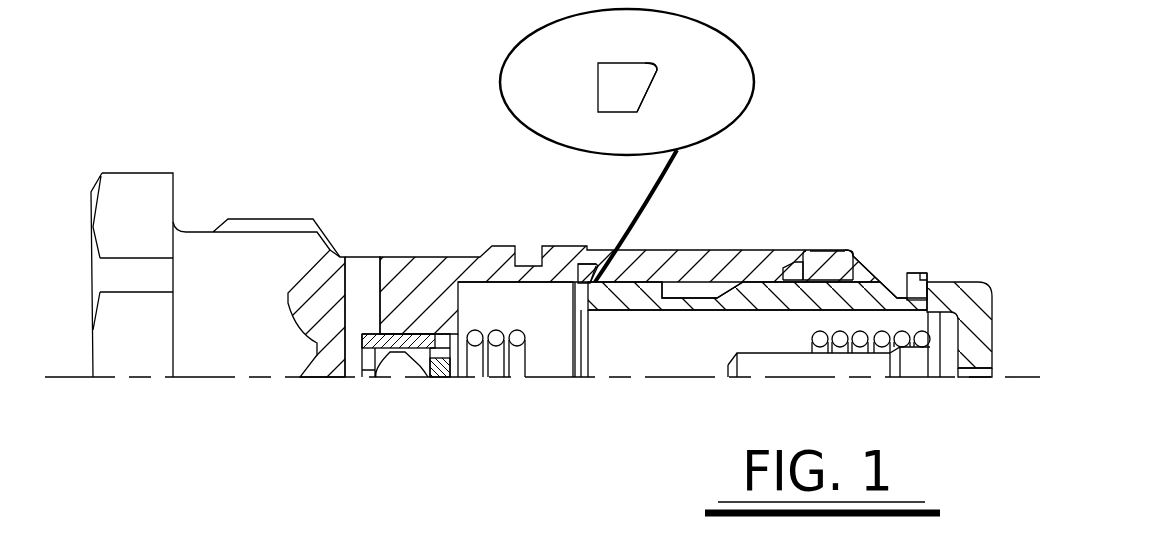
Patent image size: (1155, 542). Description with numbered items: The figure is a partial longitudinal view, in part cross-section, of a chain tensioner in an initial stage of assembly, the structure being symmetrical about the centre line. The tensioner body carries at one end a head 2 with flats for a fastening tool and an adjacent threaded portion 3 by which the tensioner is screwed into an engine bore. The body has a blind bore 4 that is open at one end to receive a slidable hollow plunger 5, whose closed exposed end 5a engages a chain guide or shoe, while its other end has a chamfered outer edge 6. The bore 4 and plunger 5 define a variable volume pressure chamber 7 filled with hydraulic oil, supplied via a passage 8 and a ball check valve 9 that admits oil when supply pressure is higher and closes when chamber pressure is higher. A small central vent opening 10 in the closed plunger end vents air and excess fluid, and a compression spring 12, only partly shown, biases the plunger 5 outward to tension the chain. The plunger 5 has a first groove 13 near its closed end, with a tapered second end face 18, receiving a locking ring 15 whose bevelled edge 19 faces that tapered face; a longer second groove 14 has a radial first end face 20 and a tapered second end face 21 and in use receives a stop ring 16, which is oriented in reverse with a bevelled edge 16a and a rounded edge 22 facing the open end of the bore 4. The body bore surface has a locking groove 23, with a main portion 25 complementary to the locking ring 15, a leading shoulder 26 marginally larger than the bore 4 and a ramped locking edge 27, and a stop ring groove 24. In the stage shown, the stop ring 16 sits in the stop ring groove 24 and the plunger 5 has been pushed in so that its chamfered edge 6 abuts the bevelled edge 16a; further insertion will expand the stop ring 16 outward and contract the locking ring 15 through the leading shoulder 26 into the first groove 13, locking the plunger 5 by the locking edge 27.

The head 2 is at (115, 227).
The threaded portion 3 is at (253, 226).
The blind bore 4 is at (535, 290).
The plunger 5 is at (985, 323).
The exposed end 5a is at (1013, 373).
The chamfered outer edge 6 is at (576, 283).
The pressure chamber 7 is at (597, 352).
The passage 8 is at (368, 275).
The ball check valve 9 is at (397, 363).
The vent opening 10 is at (967, 372).
The compression spring 12 is at (473, 340).
The first groove 13 is at (930, 284).
The second groove 14 is at (697, 287).
The locking ring 15 is at (925, 277).
The stop ring 16 is at (582, 278).
The bevelled edge 16a is at (652, 95).
The second end face 18 is at (912, 266).
The bevelled edge 19 is at (921, 270).
The first end face 20 is at (667, 290).
The second end face 21 is at (737, 283).
The rounded edge 22 is at (660, 68).
The locking groove 23 is at (806, 268).
The stop ring groove 24 is at (593, 277).
The main portion 25 is at (826, 252).
The leading shoulder 26 is at (848, 260).
The ramped locking edge 27 is at (888, 276).